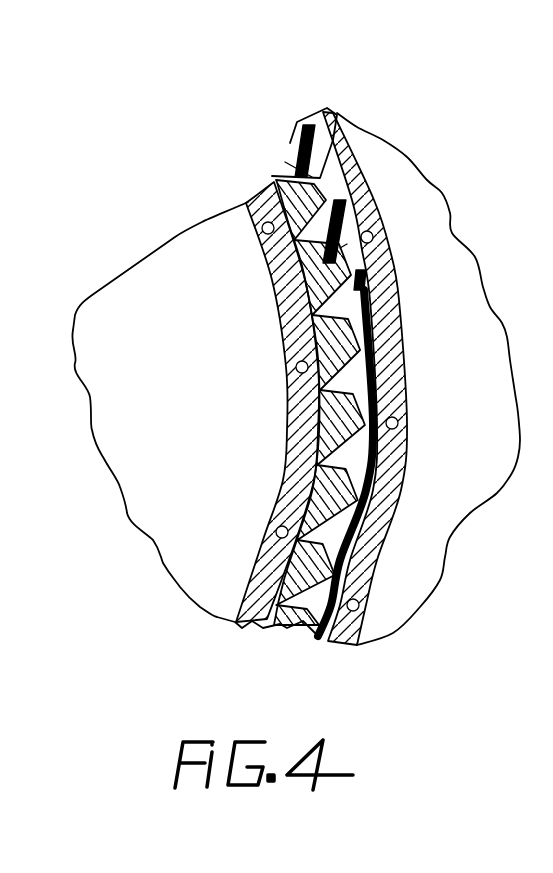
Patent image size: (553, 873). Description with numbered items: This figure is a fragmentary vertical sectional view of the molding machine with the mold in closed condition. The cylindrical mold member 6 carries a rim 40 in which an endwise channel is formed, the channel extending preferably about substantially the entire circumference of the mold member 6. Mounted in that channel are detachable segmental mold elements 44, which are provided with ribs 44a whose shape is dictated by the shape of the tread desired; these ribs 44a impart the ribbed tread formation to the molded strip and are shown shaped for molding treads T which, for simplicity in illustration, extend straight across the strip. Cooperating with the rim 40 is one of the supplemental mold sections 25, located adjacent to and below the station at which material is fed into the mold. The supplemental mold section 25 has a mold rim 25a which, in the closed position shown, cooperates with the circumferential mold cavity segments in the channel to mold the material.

The cylindrical mold member 6 is at (173, 268).
The supplemental mold section 25 is at (460, 287).
The mold rim 25a is at (400, 400).
The rim 40 is at (257, 197).
The segmental mold element 44 is at (277, 187).
The rib 44a is at (300, 123).
The tread T is at (345, 246).